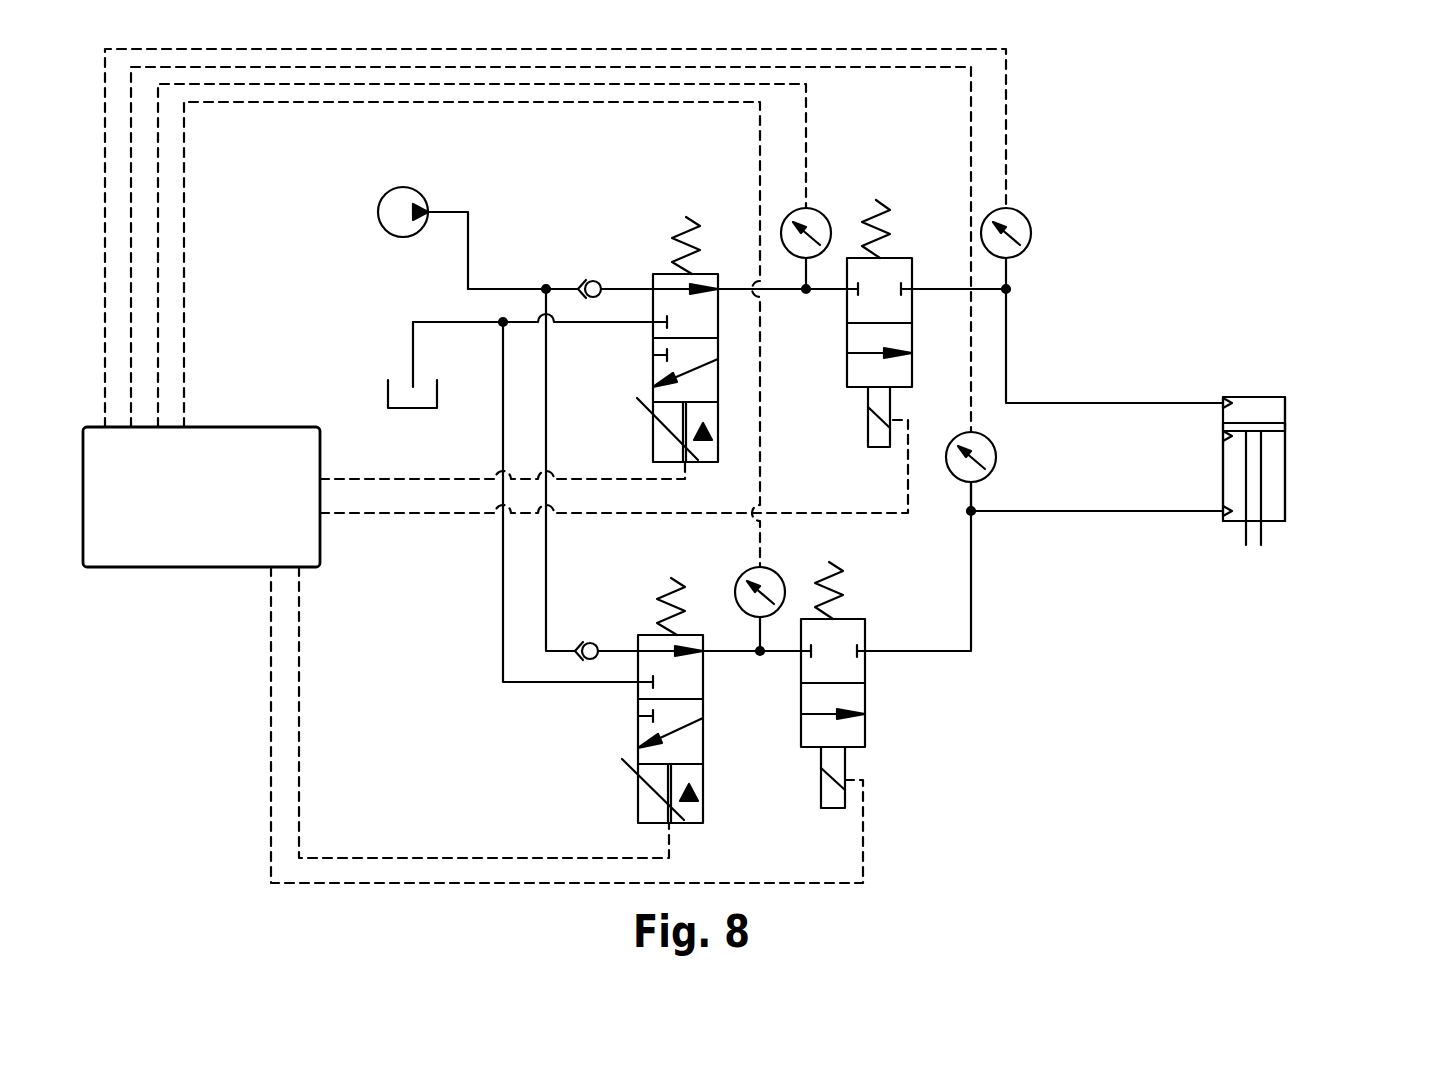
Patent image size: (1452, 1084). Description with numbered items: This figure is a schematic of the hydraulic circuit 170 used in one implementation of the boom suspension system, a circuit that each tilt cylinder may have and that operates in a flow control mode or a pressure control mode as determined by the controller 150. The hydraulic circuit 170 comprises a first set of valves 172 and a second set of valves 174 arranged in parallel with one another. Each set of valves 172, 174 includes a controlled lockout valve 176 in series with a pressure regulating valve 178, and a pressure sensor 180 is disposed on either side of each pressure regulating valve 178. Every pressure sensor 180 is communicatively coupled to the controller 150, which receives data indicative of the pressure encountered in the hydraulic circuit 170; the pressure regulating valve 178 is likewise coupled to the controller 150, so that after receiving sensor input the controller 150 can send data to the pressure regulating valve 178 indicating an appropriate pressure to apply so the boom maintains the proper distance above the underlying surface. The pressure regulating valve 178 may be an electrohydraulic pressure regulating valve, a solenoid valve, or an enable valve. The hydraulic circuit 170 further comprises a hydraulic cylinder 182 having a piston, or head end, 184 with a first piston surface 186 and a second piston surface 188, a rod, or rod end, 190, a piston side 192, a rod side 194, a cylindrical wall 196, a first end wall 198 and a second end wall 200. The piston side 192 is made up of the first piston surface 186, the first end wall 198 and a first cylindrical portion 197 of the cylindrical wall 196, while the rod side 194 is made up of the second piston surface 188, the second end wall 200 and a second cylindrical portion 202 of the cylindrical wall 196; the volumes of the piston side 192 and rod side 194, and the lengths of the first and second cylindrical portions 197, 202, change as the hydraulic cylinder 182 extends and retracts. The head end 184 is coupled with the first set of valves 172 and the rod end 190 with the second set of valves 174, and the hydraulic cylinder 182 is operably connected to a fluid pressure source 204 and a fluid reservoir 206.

The controller 150 is at (181, 523).
The hydraulic circuit 170 is at (290, 262).
The first set of valves 172 is at (678, 158).
The second set of valves 174 is at (600, 742).
The controlled lockout valve 176 is at (653, 274).
The pressure regulating valve 178 is at (900, 258).
The pressure sensor 180 is at (808, 210).
The hydraulic cylinder 182 is at (1282, 447).
The piston 184 is at (1260, 420).
The first piston surface 186 is at (1240, 408).
The second piston surface 188 is at (1233, 425).
The rod 190 is at (1253, 498).
The piston side 192 is at (1275, 405).
The rod side 194 is at (1233, 478).
The cylindrical wall 196 is at (1287, 515).
The first cylindrical portion 197 is at (1287, 415).
The first end wall 198 is at (1228, 398).
The second end wall 200 is at (1275, 523).
The second cylindrical portion 202 is at (1278, 463).
The fluid pressure source 204 is at (380, 195).
The fluid reservoir 206 is at (413, 408).